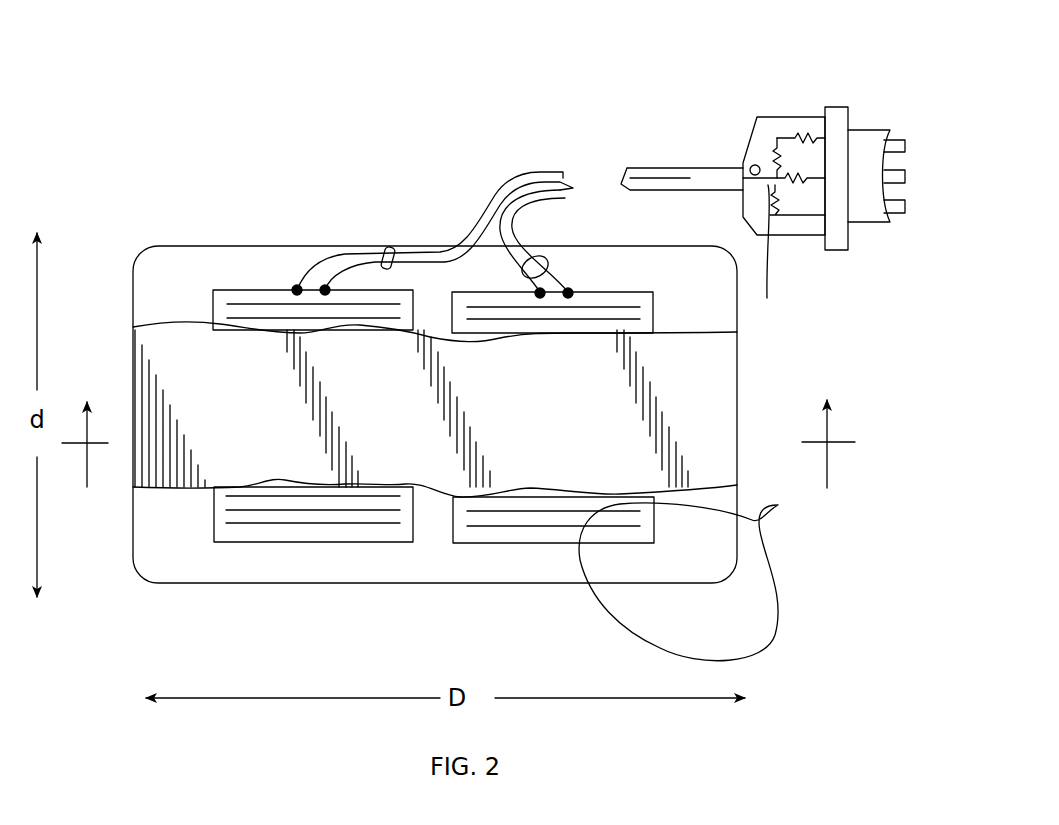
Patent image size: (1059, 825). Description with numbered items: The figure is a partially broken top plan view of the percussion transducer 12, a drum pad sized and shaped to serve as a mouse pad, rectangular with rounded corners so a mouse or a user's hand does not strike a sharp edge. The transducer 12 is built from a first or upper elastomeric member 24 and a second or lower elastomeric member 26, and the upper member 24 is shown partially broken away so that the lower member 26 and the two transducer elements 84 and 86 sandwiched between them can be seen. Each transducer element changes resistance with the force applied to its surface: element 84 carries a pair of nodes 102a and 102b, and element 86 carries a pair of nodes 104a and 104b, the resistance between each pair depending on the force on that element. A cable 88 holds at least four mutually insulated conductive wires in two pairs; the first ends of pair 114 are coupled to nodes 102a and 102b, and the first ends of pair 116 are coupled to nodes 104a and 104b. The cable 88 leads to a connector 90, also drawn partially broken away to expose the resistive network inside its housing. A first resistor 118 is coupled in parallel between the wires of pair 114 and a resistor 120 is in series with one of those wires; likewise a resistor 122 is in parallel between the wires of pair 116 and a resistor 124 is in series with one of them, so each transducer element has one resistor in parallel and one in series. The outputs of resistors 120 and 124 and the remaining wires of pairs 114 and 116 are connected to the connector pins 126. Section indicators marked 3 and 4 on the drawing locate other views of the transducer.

The percussion transducer 12 is at (215, 113).
The first elastomeric member 24 is at (567, 400).
The second elastomeric member 26 is at (423, 565).
The transducer element 84 is at (280, 532).
The transducer element 86 is at (528, 535).
The cable 88 is at (497, 178).
The connector 90 is at (812, 248).
The node 102a is at (293, 273).
The node 102b is at (322, 275).
The node 104a is at (578, 283).
The node 104b is at (583, 287).
The wire pair 114 is at (394, 250).
The wire pair 116 is at (548, 265).
The first resistor 118 is at (790, 137).
The resistor 120 is at (800, 117).
The resistor 122 is at (793, 200).
The resistor 124 is at (797, 193).
The connector pins 126 is at (893, 232).
The section line 3 is at (458, 425).
The section view region 4 is at (688, 581).